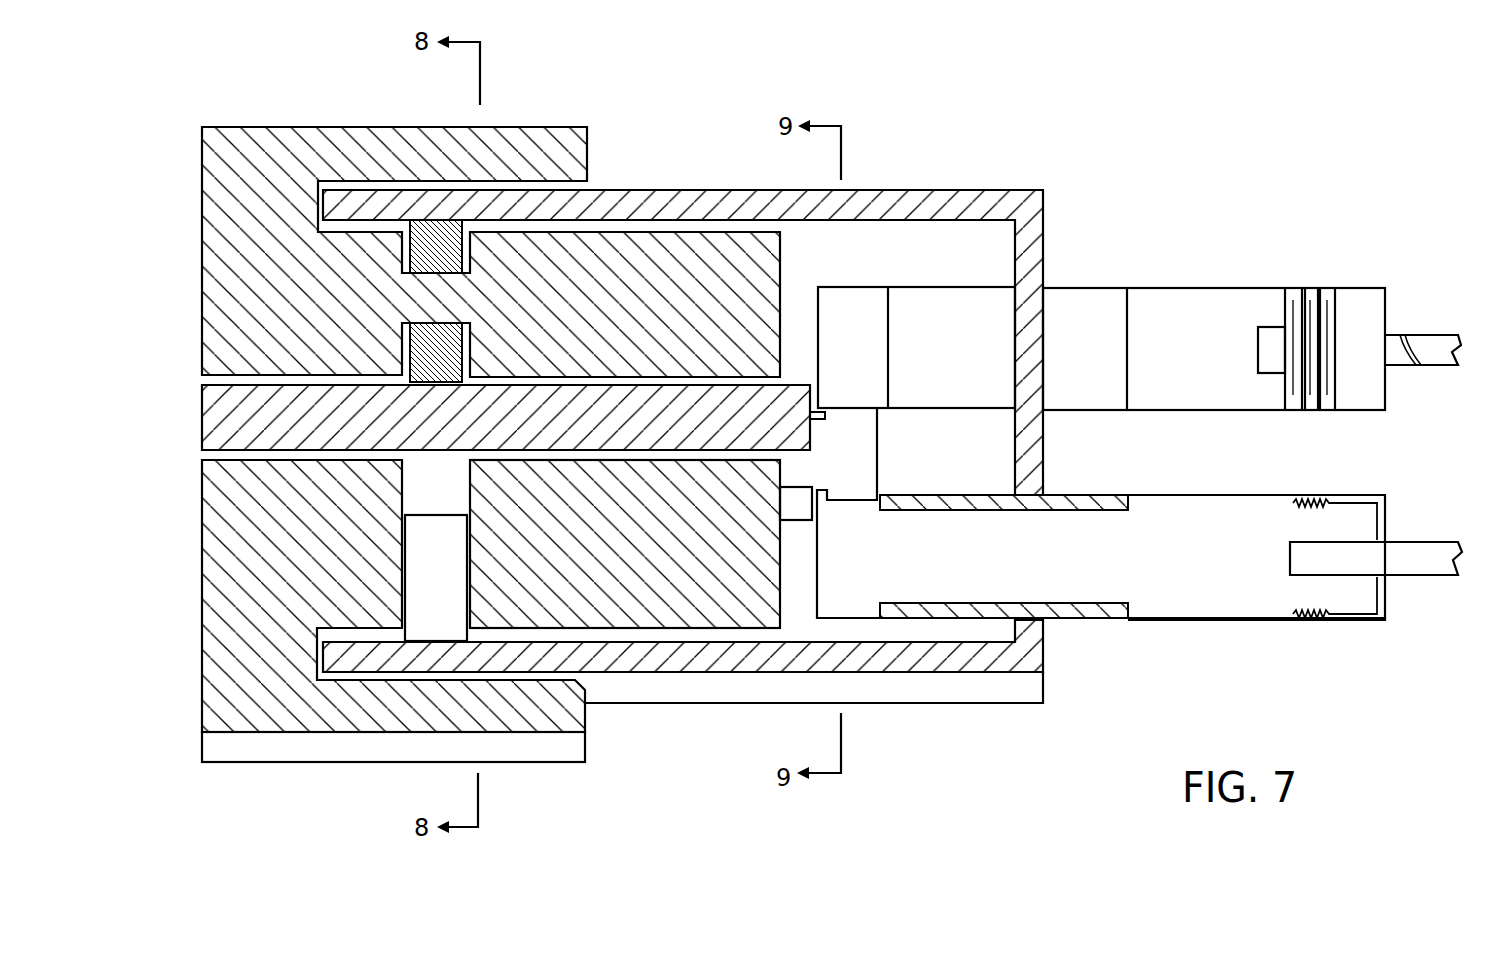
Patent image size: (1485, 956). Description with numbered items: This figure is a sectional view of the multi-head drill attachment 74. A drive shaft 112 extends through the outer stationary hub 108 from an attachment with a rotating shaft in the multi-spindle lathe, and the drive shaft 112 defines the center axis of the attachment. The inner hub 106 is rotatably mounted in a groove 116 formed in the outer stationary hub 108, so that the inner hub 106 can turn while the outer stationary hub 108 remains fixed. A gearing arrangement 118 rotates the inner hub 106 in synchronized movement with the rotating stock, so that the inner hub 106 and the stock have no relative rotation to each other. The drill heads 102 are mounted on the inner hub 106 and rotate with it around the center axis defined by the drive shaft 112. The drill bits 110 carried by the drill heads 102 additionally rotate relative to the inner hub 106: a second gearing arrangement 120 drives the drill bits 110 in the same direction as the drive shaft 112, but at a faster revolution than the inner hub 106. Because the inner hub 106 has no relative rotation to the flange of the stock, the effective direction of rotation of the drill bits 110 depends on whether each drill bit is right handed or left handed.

The multi-head drill attachment 74 is at (832, 444).
The drill heads 102 is at (1108, 331).
The inner hub 106 is at (718, 672).
The outer stationary hub 108 is at (577, 155).
The drill bits 110 is at (1416, 575).
The drive shaft 112 is at (798, 384).
The groove 116 is at (575, 680).
The gearing arrangement 118 is at (458, 615).
The second gearing arrangement 120 is at (862, 458).